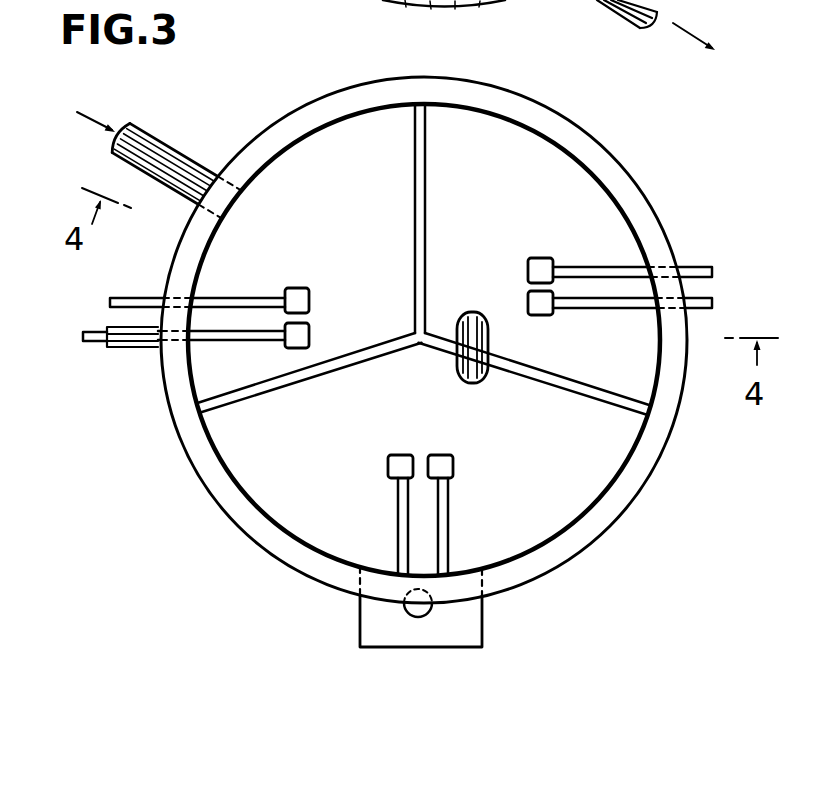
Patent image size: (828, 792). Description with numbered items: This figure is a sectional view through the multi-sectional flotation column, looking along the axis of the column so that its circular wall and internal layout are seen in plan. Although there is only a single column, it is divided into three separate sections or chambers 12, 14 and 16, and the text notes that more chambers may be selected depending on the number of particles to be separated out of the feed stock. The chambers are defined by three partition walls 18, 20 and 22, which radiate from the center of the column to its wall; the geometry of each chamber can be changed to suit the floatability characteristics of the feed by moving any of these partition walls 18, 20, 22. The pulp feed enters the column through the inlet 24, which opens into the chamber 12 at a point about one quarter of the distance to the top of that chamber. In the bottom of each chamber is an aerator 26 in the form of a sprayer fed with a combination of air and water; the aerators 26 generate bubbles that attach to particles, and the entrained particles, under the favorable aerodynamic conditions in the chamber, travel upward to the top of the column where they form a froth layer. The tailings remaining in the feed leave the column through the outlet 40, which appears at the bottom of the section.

The chamber 12 is at (344, 240).
The chamber 14 is at (554, 217).
The chamber 16 is at (434, 403).
The partition wall 18 is at (426, 245).
The partition wall 20 is at (548, 372).
The partition wall 22 is at (374, 346).
The inlet 24 is at (170, 146).
The aerator 26 is at (246, 343).
The outlet 40 is at (428, 613).